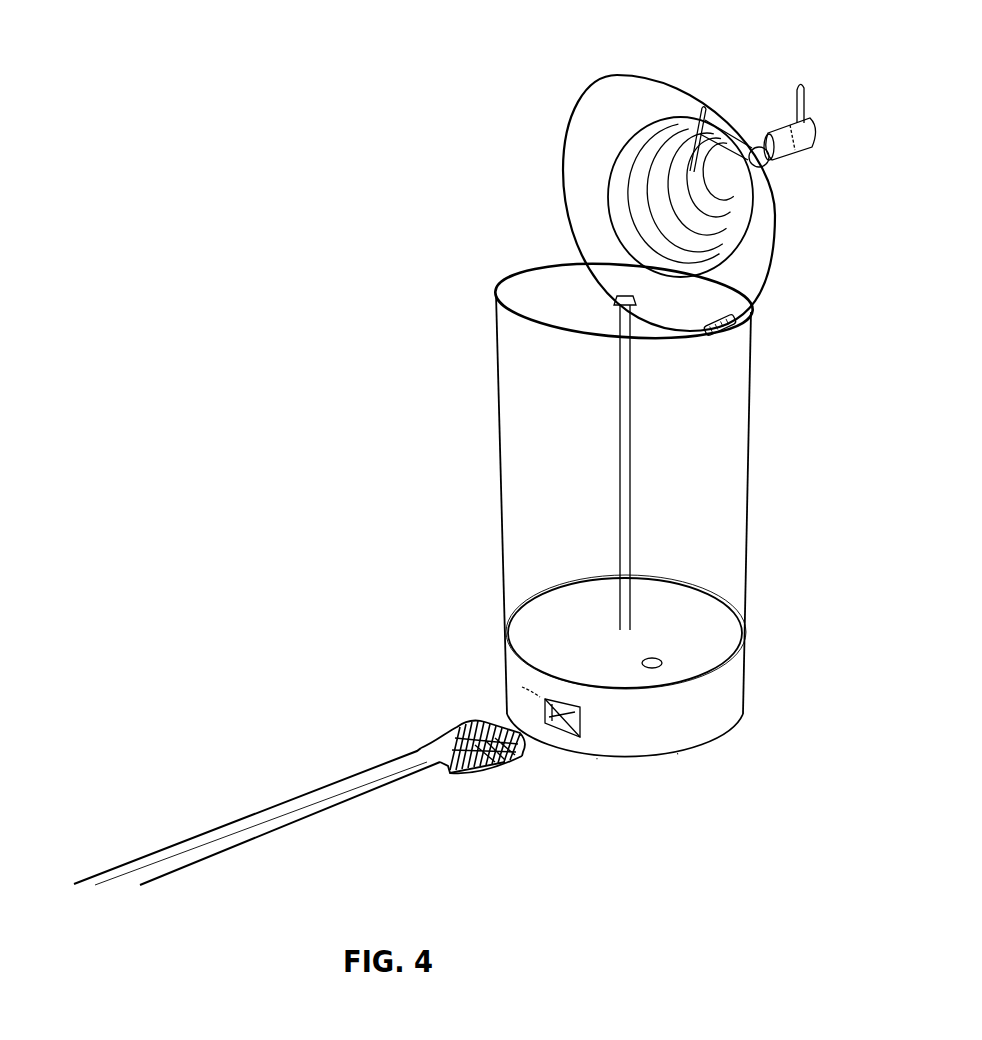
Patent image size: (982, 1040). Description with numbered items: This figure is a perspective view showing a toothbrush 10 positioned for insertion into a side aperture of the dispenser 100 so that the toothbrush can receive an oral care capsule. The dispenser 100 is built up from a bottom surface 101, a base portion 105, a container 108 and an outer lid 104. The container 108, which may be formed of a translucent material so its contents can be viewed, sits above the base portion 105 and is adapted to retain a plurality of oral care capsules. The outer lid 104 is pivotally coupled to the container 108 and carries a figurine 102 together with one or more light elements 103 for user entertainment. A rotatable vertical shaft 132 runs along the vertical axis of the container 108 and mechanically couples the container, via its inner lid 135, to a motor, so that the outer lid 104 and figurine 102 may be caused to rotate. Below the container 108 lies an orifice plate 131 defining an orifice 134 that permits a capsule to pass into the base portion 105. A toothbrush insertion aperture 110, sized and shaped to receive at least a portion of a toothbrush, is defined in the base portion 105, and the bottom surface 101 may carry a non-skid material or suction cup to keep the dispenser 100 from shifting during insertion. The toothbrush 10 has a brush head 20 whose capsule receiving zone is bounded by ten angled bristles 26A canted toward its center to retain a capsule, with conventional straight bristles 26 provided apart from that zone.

The dispenser 100 is at (420, 84).
The outer lid 104 is at (613, 92).
The figurine 102 is at (668, 118).
The light element 103 is at (805, 128).
The inner lid 135 is at (540, 285).
The container 108 is at (497, 393).
The rotatable vertical shaft 132 is at (620, 447).
The orifice plate 131 is at (560, 633).
The base portion 105 is at (727, 680).
The bottom surface 101 is at (728, 720).
The orifice 134 is at (653, 668).
The toothbrush insertion aperture 110 is at (548, 715).
The toothbrush 10 is at (210, 780).
The brush head 20 is at (465, 725).
The straight bristles 26 is at (463, 770).
The angled bristles 26A is at (498, 765).